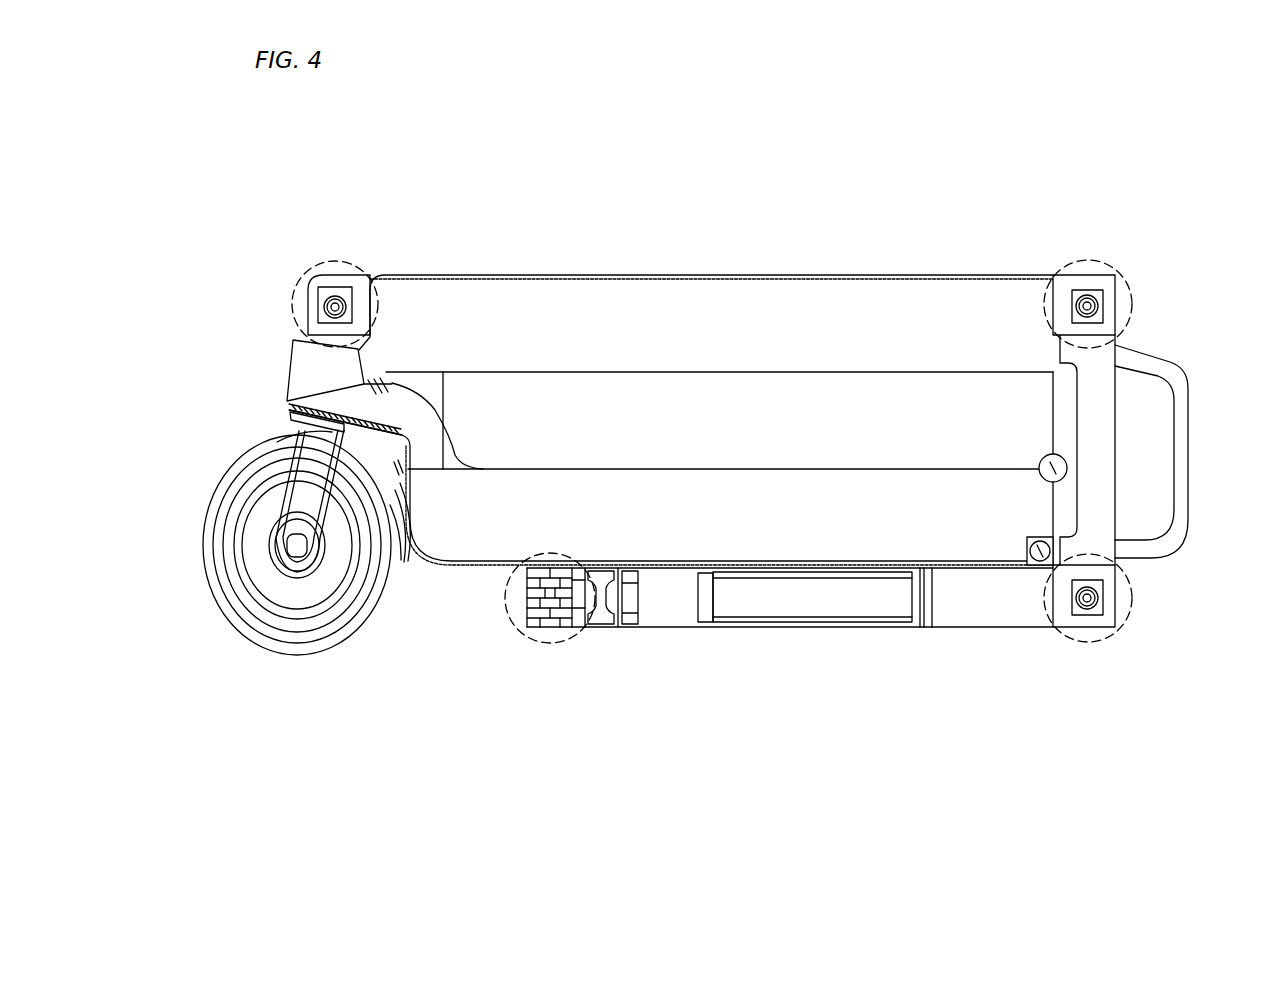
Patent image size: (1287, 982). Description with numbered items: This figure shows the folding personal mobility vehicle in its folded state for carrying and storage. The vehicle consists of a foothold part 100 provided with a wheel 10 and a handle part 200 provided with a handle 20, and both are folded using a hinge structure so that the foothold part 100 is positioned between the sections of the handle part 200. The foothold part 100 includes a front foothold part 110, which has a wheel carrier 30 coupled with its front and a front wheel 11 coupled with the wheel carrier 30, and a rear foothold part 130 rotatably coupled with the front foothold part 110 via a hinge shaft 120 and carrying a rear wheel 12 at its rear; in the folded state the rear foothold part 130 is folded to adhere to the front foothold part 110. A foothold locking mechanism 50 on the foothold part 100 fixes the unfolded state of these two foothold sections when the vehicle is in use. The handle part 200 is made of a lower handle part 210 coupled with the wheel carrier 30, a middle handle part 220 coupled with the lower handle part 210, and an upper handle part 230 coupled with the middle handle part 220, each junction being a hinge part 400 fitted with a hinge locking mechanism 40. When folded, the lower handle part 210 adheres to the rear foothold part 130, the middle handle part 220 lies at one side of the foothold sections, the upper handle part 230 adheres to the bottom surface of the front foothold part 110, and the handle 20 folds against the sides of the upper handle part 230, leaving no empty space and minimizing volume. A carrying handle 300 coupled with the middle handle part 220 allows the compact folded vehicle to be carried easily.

The wheel 10 is at (269, 555).
The front wheel 11 is at (210, 538).
The rear wheel 12 is at (375, 440).
The handle 20 is at (800, 600).
The wheel carrier 30 is at (302, 370).
The hinge locking mechanism 40 is at (333, 307).
The foothold locking mechanism 50 is at (1040, 568).
The foothold part 100 is at (472, 577).
The front foothold part 110 is at (880, 525).
The hinge shaft 120 is at (1065, 466).
The rear foothold part 130 is at (760, 400).
The handle part 200 is at (488, 268).
The lower handle part 210 is at (605, 293).
The middle handle part 220 is at (1098, 410).
The upper handle part 230 is at (972, 605).
The carrying handle 300 is at (1177, 362).
The hinge part 400 is at (335, 262).